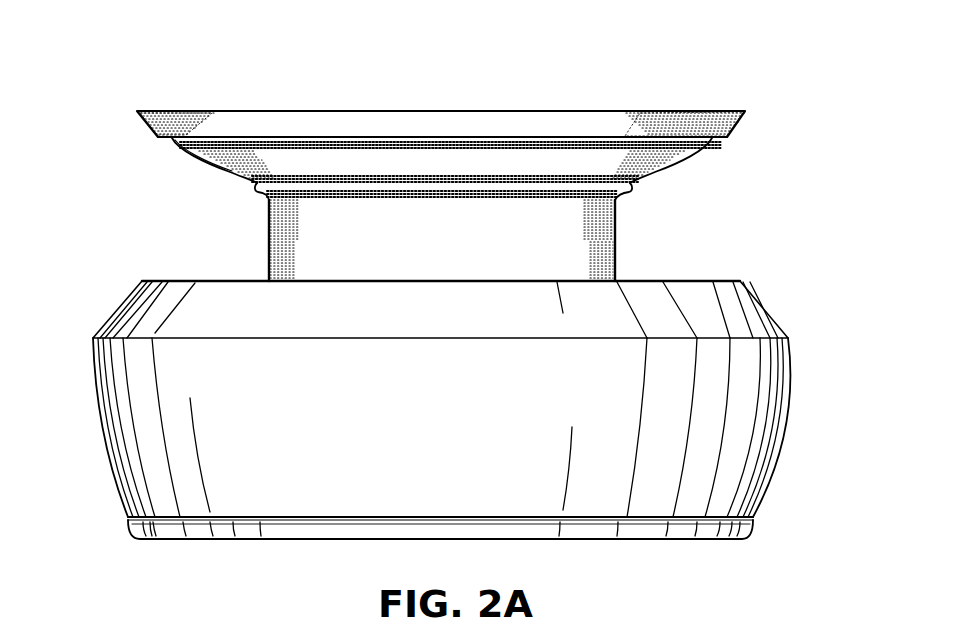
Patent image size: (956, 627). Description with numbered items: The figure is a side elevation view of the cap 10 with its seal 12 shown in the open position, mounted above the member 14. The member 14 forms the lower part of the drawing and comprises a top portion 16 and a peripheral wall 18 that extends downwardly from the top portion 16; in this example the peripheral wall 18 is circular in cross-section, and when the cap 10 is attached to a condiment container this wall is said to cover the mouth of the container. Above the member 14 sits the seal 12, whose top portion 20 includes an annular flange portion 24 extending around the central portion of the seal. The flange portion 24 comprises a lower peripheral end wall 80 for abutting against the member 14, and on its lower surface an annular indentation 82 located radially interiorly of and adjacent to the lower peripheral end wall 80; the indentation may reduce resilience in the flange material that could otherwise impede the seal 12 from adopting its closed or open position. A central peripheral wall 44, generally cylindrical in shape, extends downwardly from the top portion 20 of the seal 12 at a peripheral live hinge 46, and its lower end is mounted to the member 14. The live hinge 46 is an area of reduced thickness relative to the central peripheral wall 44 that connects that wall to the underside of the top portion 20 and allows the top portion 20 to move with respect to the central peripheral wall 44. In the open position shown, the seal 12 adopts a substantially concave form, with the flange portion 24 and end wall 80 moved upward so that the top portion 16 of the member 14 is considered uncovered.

The cap 10 is at (148, 69).
The seal 12 is at (458, 110).
The member 14 is at (68, 355).
The top portion 16 is at (722, 310).
The peripheral wall 18 is at (737, 433).
The top portion 20 is at (632, 114).
The annular flange portion 24 is at (308, 162).
The central peripheral wall 44 is at (553, 239).
The peripheral live hinge 46 is at (636, 184).
The lower peripheral end wall 80 is at (141, 120).
The annular indentation 82 is at (186, 151).